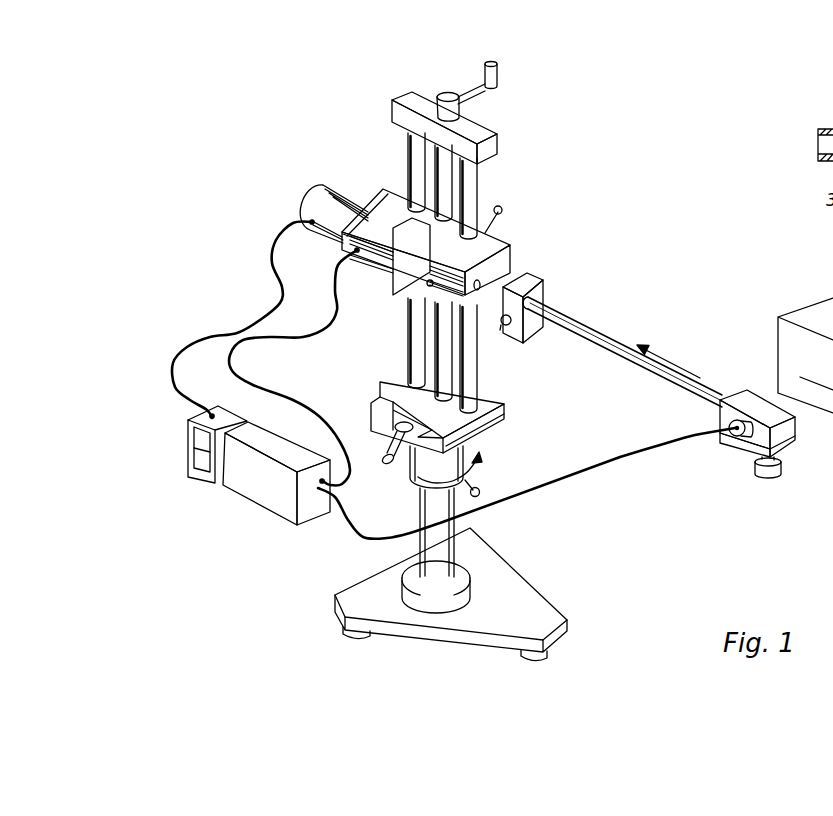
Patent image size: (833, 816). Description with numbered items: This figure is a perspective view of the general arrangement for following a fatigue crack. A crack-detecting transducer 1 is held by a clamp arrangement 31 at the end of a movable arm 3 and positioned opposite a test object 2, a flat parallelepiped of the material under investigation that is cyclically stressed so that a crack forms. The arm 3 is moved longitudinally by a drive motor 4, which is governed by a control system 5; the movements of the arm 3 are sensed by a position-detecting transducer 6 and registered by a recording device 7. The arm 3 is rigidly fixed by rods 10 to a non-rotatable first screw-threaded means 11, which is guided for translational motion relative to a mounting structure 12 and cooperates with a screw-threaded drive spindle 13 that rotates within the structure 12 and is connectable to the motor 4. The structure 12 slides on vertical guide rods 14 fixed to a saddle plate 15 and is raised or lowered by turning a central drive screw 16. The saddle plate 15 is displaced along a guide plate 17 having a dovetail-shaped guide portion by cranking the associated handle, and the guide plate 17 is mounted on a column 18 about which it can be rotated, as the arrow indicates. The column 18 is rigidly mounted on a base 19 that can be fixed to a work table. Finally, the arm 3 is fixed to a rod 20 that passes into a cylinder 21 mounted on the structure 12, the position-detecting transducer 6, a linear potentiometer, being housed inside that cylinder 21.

The crack-detecting transducer 1 is at (773, 397).
The test object 2 is at (800, 340).
The movable arm 3 is at (617, 340).
The drive motor 4 is at (317, 203).
The control system 5 is at (268, 497).
The position-detecting transducer 6 is at (350, 268).
The recording device 7 is at (203, 460).
The rods 10 is at (500, 277).
The first screw-threaded means 11 is at (408, 225).
The mounting structure 12 is at (487, 242).
The screw-threaded drive spindle 13 is at (430, 268).
The vertical guide rods 14 is at (473, 197).
The saddle plate 15 is at (487, 422).
The central drive screw 16 is at (440, 382).
The guide plate 17 is at (487, 437).
The column 18 is at (443, 562).
The base 19 is at (533, 613).
The rod 20 is at (463, 290).
The cylinder 21 is at (390, 250).
The clamp arrangement 31 is at (760, 447).